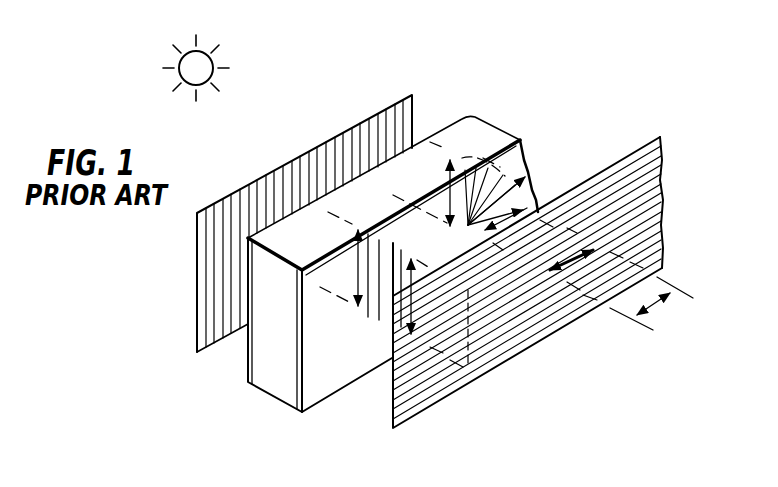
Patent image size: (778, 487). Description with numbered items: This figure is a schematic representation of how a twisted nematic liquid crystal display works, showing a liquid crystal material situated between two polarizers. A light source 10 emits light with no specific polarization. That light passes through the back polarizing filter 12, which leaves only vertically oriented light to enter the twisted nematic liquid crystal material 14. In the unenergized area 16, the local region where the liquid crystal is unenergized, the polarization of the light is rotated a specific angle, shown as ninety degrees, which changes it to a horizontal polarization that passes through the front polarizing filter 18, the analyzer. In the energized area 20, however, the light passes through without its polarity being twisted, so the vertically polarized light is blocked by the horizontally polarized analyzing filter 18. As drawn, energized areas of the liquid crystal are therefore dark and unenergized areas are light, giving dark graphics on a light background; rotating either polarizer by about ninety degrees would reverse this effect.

The light source 10 is at (200, 60).
The back polarizing filter 12 is at (370, 116).
The twisted nematic liquid crystal material 14 is at (495, 125).
The unenergized area 16 is at (527, 173).
The front polarizing filter 18 is at (507, 360).
The energized area 20 is at (379, 330).